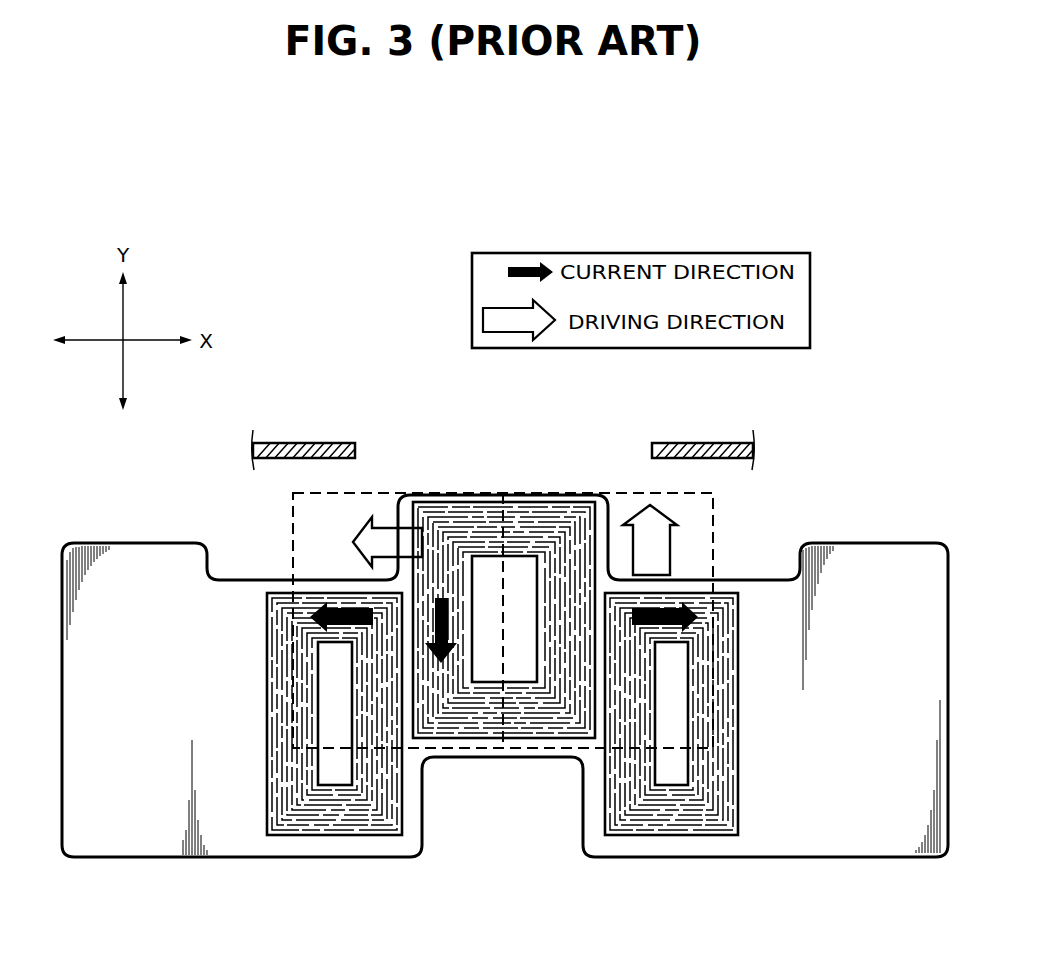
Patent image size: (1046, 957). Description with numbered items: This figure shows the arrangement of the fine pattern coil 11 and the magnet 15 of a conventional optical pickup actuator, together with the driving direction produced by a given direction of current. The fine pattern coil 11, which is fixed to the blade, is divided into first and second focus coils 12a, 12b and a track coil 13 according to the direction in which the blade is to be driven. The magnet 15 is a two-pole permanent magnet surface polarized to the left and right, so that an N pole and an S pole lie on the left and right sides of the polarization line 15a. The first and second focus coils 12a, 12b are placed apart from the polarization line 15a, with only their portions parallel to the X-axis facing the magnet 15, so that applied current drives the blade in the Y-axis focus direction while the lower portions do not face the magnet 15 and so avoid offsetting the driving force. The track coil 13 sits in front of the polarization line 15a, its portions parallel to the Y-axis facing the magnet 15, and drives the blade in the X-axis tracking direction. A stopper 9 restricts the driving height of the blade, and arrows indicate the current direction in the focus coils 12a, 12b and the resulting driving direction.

The stopper 9 is at (706, 443).
The fine pattern coil 11 is at (873, 543).
The first focus coil 12a is at (336, 820).
The second focus coil 12b is at (655, 820).
The track coil 13 is at (487, 725).
The magnet 15 is at (713, 517).
The polarization line 15a is at (506, 580).